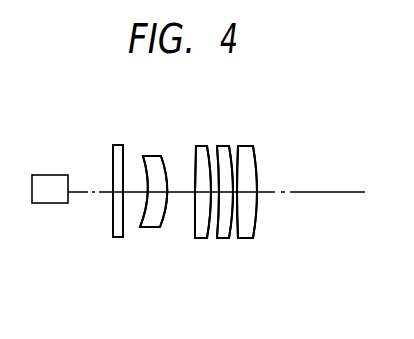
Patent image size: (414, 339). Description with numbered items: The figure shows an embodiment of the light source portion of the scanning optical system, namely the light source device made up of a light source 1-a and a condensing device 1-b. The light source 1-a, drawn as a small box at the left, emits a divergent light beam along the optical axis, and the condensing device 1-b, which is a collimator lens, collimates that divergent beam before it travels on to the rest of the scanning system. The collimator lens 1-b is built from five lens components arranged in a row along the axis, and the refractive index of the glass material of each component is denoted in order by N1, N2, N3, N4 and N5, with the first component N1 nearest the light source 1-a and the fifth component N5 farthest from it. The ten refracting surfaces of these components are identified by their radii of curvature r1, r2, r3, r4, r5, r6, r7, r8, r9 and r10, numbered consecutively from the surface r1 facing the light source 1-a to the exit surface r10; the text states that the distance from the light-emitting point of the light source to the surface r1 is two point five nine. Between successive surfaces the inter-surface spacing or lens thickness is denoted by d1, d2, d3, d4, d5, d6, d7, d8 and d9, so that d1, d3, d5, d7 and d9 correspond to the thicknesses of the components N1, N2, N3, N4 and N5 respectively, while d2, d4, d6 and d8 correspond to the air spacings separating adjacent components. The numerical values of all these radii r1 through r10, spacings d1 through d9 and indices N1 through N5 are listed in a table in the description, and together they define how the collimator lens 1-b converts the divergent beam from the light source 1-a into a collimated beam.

The light source 1-a is at (47, 203).
The condensing device (collimator lens) 1-b is at (308, 280).
The refractive index of first lens component N1 is at (117, 145).
The refractive index of second lens component N2 is at (150, 156).
The refractive index of third lens component N3 is at (200, 146).
The refractive index of fourth lens component N4 is at (226, 146).
The refractive index of fifth lens component N5 is at (250, 146).
The first inter-surface spacing d1 is at (113, 168).
The second inter-surface spacing d2 is at (135, 185).
The third inter-surface spacing d3 is at (159, 180).
The fourth inter-surface spacing d4 is at (176, 188).
The fifth inter-surface spacing d5 is at (196, 176).
The sixth inter-surface spacing d6 is at (213, 165).
The seventh inter-surface spacing d7 is at (236, 165).
The eighth inter-surface spacing d8 is at (256, 182).
The ninth inter-surface spacing d9 is at (258, 188).
The first surface radius of curvature r1 is at (113, 237).
The second surface radius of curvature r2 is at (124, 238).
The third surface radius of curvature r3 is at (141, 228).
The fourth surface radius of curvature r4 is at (159, 228).
The fifth surface radius of curvature r5 is at (195, 238).
The sixth surface radius of curvature r6 is at (208, 238).
The seventh surface radius of curvature r7 is at (219, 238).
The eighth surface radius of curvature r8 is at (232, 238).
The ninth surface radius of curvature r9 is at (242, 238).
The tenth surface radius of curvature r10 is at (257, 238).